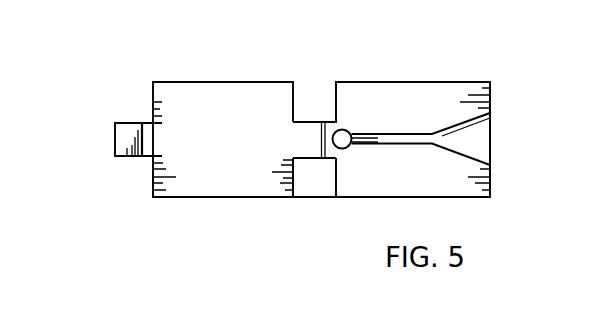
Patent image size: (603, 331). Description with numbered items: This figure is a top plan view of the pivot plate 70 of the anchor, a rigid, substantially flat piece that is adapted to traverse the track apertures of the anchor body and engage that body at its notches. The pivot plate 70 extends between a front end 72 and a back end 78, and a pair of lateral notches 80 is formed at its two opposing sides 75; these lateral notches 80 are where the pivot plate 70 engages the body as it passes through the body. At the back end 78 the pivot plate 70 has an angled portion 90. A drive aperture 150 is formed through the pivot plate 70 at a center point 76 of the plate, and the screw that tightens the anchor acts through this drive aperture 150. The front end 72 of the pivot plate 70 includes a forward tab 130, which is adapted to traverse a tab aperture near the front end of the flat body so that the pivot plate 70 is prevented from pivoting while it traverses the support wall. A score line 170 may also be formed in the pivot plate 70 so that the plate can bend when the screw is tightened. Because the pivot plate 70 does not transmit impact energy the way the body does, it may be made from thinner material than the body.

The pivot plate 70 is at (217, 98).
The front end 72 is at (153, 172).
The opposing sides 75 is at (387, 82).
The center point 76 is at (301, 138).
The back end 78 is at (492, 88).
The lateral notches 80 is at (293, 178).
The angled portion 90 is at (482, 148).
The forward tab 130 is at (128, 127).
The drive aperture 150 is at (344, 130).
The score line 170 is at (317, 142).